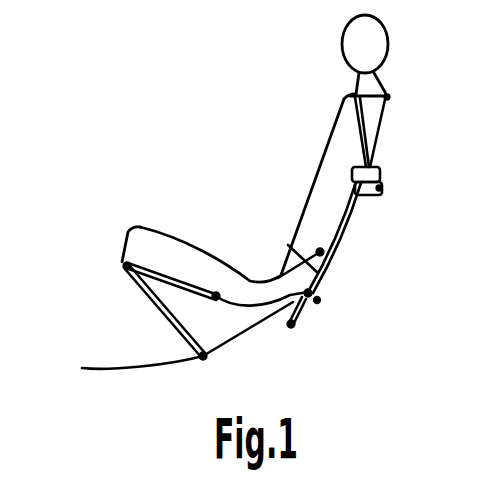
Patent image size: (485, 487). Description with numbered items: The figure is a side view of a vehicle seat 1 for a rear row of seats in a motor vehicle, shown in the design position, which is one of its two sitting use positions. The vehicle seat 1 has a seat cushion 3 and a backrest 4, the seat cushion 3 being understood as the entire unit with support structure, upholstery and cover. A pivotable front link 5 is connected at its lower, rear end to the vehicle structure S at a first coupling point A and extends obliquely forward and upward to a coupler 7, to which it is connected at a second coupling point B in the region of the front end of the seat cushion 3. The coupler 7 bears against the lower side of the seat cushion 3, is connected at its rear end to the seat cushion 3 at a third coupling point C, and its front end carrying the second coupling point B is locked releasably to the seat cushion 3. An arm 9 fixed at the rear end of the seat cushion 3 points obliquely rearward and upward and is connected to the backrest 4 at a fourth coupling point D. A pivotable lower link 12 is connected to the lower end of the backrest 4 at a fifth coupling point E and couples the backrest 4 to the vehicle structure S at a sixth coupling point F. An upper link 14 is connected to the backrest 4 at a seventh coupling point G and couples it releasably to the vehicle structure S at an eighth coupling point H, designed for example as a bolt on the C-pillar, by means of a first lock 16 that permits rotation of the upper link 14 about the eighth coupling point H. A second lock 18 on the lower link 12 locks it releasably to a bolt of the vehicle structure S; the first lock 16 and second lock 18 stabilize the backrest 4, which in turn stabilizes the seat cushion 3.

The vehicle seat 1 is at (186, 120).
The seat cushion 3 is at (166, 262).
The backrest 4 is at (333, 173).
The front link 5 is at (160, 308).
The coupler 7 is at (189, 250).
The arm 9 is at (290, 244).
The lower link 12 is at (312, 312).
The upper link 14 is at (384, 139).
The first lock 16 is at (358, 194).
The second lock 18 is at (318, 303).
The first coupling point A is at (203, 358).
The second coupling point B is at (125, 268).
The third coupling point C is at (221, 258).
The fourth coupling point D is at (325, 250).
The fifth coupling point E is at (316, 293).
The sixth coupling point F is at (295, 330).
The seventh coupling point G is at (388, 98).
The eighth coupling point H is at (380, 188).
The vehicle structure S is at (262, 388).